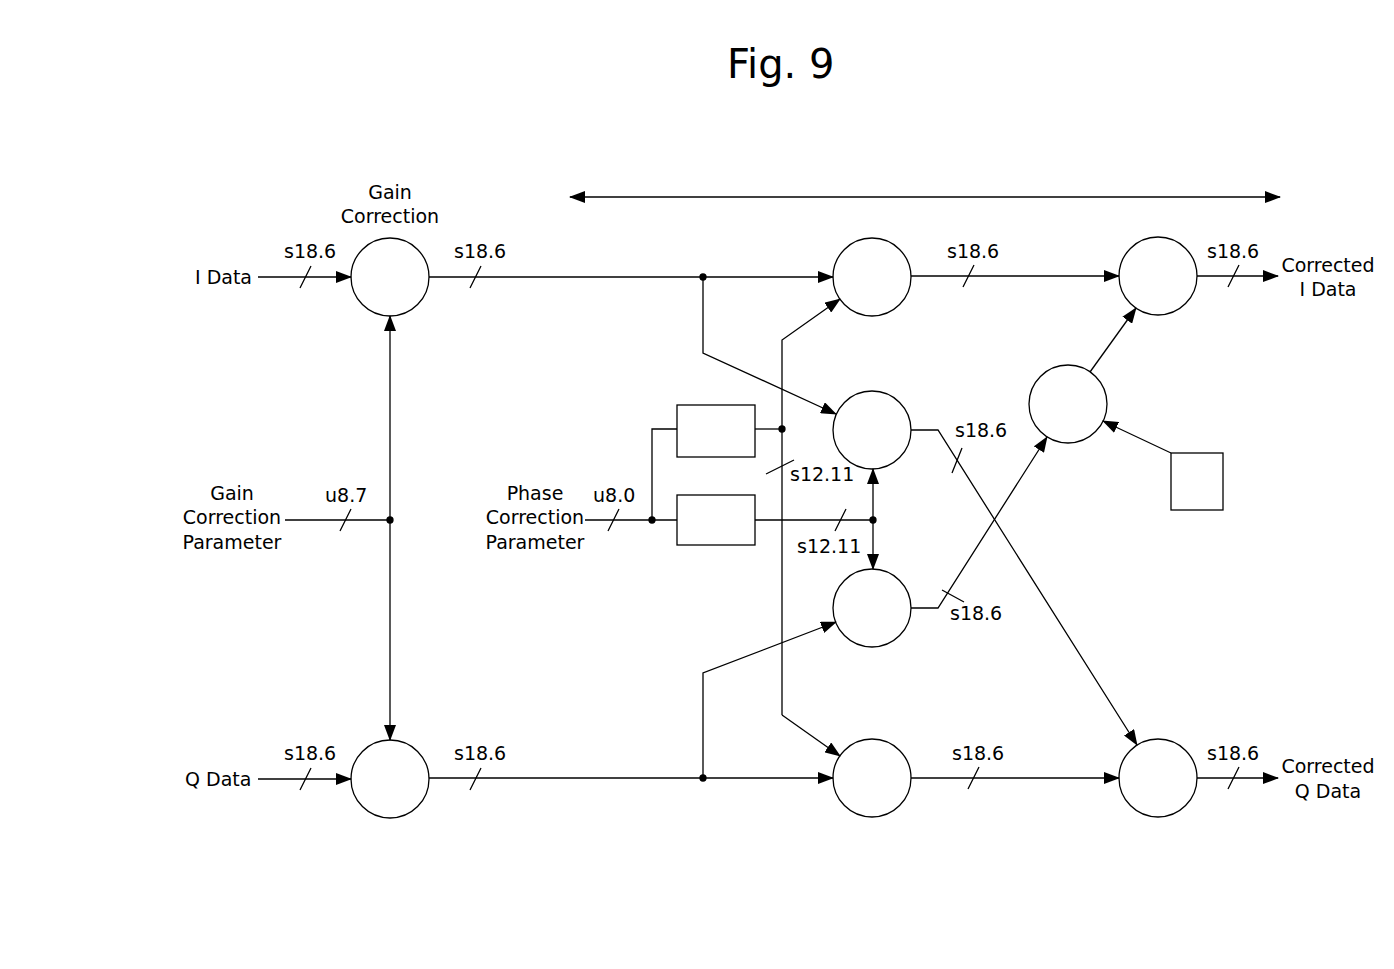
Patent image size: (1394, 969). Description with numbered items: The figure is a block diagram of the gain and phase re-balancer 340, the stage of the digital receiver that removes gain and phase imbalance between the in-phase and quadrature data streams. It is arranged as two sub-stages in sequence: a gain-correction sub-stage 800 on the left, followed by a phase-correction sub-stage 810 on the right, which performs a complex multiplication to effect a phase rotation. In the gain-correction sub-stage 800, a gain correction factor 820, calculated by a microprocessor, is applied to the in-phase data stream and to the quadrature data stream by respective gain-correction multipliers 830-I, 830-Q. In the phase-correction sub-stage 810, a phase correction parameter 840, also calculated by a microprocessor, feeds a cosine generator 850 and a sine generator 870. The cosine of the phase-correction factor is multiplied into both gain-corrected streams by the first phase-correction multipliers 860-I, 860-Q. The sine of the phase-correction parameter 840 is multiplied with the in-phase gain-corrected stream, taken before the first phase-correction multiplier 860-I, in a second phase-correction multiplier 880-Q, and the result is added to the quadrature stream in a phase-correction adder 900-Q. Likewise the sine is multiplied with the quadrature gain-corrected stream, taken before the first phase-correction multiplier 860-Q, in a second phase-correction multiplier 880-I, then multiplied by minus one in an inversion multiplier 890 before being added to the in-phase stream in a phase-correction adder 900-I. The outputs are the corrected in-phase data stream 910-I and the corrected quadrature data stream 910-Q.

The gain and phase re-balancer 340 is at (275, 178).
The gain-correction sub-stage 800 is at (391, 145).
The phase-correction sub-stage 810 is at (910, 130).
The gain correction factor 820 is at (301, 518).
The gain-correction multiplier 830-I is at (368, 296).
The gain-correction multiplier 830-Q is at (388, 801).
The phase correction parameter 840 is at (592, 522).
The cosine generator 850 is at (688, 414).
The first phase-correction multiplier 860-I is at (857, 259).
The first phase-correction multiplier 860-Q is at (880, 801).
The sine generator 870 is at (706, 546).
The second phase-correction multiplier 880-I is at (878, 632).
The second phase-correction multiplier 880-Q is at (878, 406).
The inversion multiplier 890 is at (1056, 382).
The phase-correction adder 900-I is at (1143, 256).
The phase-correction adder 900-Q is at (1167, 753).
The corrected in-phase data stream 910-I is at (1249, 282).
The corrected quadrature data stream 910-Q is at (1249, 786).